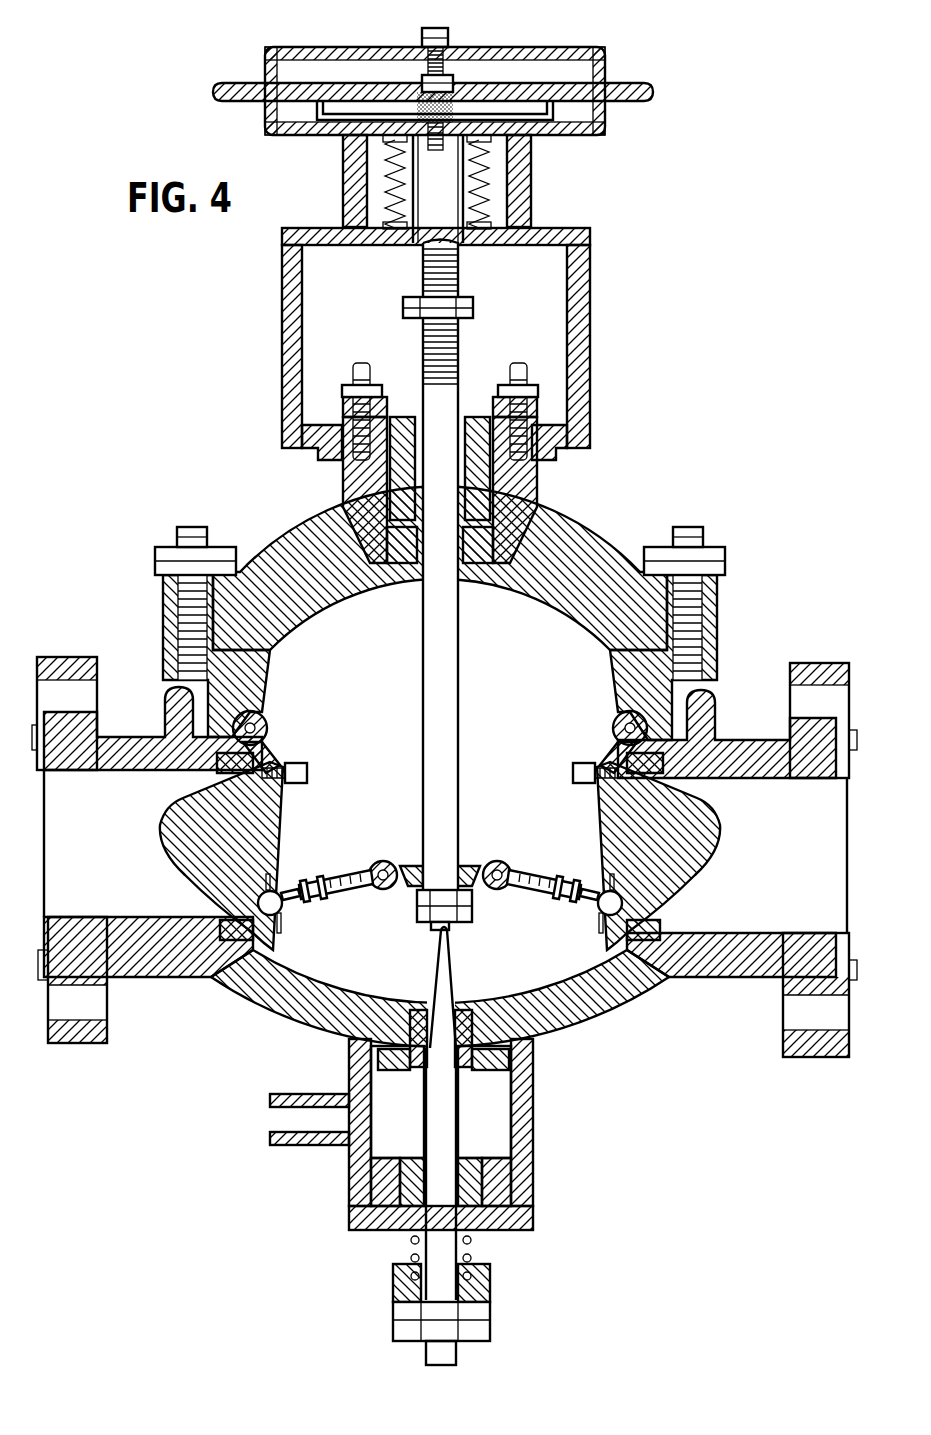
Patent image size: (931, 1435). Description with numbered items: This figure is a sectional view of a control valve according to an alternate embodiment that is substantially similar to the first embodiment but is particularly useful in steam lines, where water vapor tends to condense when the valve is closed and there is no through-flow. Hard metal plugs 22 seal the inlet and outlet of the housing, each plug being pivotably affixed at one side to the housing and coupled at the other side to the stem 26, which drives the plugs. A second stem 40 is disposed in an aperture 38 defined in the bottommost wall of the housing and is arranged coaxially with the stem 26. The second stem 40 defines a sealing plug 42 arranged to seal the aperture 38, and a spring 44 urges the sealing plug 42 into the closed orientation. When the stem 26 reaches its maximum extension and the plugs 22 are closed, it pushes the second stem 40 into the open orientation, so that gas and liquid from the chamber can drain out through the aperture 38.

The plug 22 is at (183, 804).
The stem 26 is at (460, 650).
The aperture 38 is at (453, 1050).
The second stem 40 is at (452, 955).
The sealing plug 42 is at (446, 1050).
The spring 44 is at (470, 1240).